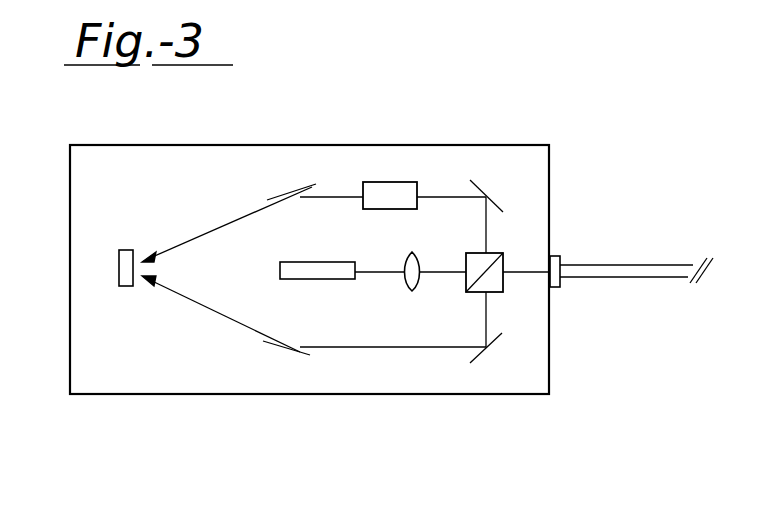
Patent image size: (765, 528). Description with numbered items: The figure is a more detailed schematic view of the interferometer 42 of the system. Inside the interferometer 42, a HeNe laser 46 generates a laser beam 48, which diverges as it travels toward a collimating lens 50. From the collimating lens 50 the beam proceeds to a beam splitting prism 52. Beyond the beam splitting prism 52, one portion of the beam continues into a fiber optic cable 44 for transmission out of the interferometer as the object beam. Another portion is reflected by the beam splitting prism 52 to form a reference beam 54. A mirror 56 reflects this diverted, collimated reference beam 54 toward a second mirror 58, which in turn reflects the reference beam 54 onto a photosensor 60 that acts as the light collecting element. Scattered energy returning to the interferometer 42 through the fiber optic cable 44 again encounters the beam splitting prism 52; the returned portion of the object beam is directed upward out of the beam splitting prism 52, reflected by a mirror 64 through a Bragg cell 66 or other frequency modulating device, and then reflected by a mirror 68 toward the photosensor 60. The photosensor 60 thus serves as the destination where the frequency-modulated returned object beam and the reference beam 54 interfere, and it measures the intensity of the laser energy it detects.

The interferometer 42 is at (70, 182).
The fiber optic cable 44 is at (590, 263).
The laser 46 is at (331, 263).
The laser beam 48 is at (388, 272).
The collimating lens 50 is at (420, 262).
The beam splitting prism 52 is at (502, 291).
The reference beam 54 is at (384, 348).
The mirror 56 is at (477, 357).
The mirror 58 is at (270, 341).
The photosensor 60 is at (120, 270).
The mirror 64 is at (478, 187).
The Bragg cell 66 is at (390, 182).
The mirror 68 is at (278, 196).